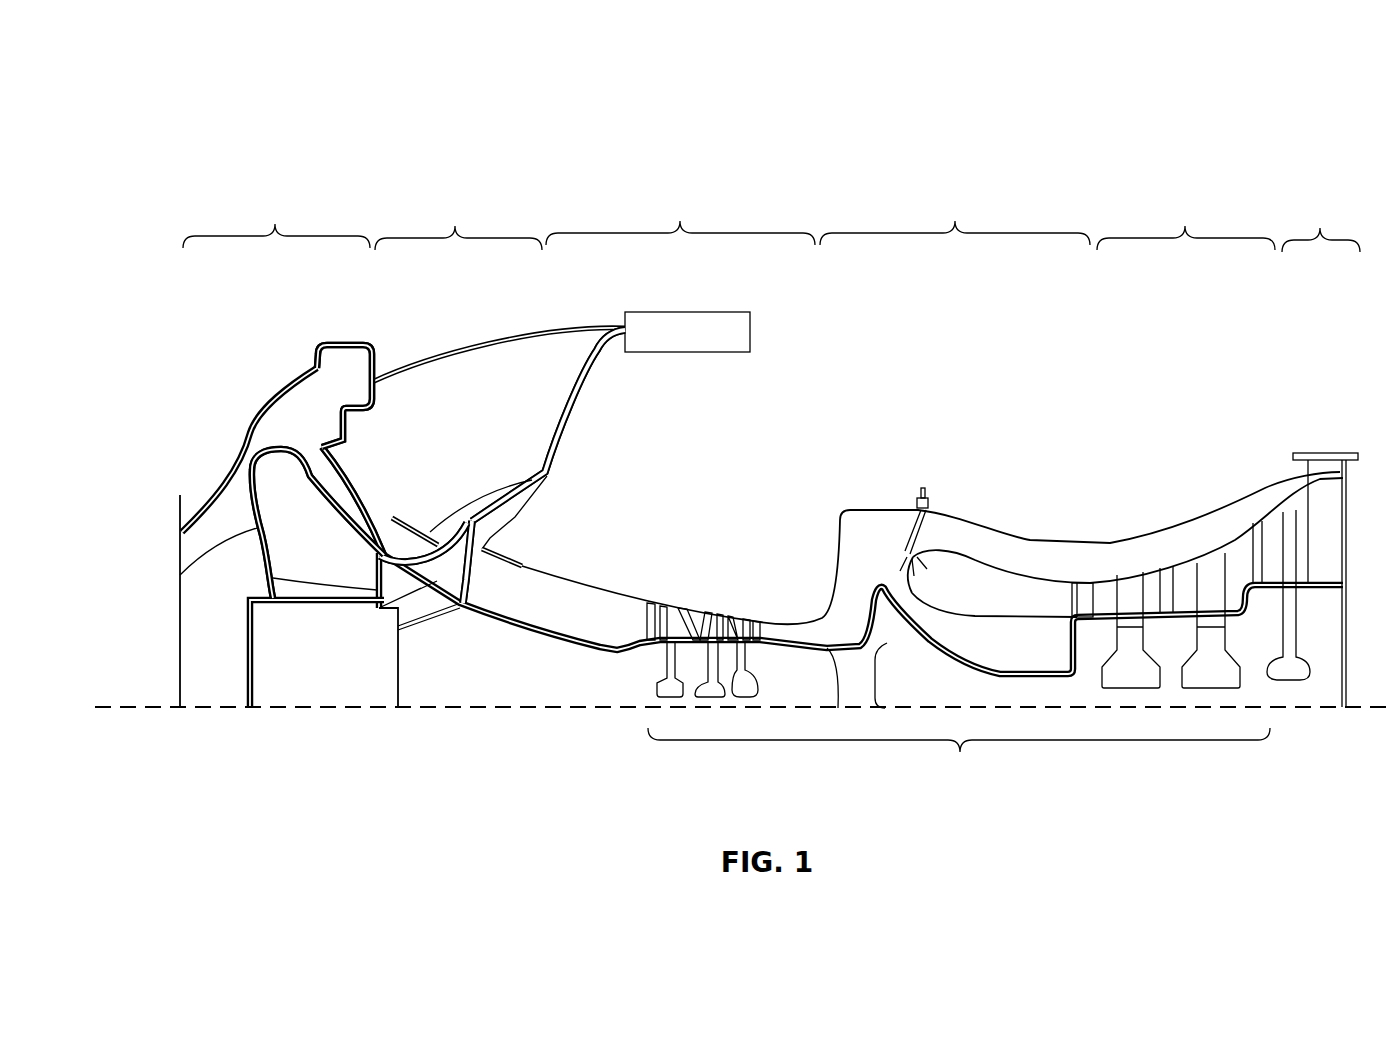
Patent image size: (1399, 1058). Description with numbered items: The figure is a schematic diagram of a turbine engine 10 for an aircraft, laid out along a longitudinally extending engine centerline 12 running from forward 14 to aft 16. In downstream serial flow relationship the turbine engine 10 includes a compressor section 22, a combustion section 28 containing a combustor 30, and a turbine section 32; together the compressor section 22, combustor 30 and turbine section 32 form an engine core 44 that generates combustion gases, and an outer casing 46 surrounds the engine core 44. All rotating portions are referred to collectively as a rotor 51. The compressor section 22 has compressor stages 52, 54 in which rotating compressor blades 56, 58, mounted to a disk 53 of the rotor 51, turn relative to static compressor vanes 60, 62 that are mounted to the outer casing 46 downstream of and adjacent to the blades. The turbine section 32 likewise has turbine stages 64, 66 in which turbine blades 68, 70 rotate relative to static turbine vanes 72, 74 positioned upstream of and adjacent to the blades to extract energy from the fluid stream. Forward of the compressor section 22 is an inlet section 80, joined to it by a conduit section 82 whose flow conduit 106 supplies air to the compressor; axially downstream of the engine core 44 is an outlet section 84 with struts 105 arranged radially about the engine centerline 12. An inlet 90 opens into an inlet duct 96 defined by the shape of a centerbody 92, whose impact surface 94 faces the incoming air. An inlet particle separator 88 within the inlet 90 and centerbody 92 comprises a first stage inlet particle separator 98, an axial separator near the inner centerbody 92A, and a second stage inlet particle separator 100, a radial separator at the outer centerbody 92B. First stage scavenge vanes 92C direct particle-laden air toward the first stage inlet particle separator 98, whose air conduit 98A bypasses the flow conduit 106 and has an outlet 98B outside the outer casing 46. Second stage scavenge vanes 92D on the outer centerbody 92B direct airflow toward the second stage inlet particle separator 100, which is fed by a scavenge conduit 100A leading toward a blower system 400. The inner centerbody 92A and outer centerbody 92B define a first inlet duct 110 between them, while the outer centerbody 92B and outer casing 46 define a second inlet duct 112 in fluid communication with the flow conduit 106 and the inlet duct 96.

The turbine engine 10 is at (126, 152).
The engine centerline 12 is at (203, 712).
The forward 14 is at (96, 707).
The aft 16 is at (1393, 707).
The compressor section 22 is at (680, 213).
The combustion section 28 is at (955, 213).
The combustor 30 is at (953, 570).
The turbine section 32 is at (1186, 223).
The engine core 44 is at (959, 759).
The outer casing 46 is at (252, 416).
The rotor 51 is at (863, 663).
The compressor stage 52 is at (657, 481).
The disk 53 is at (667, 667).
The compressor stage 54 is at (762, 503).
The compressor blade 56 is at (680, 612).
The compressor blade 58 is at (710, 614).
The static compressor vane 60 is at (648, 612).
The static compressor vane 62 is at (740, 622).
The turbine stage 64 is at (1062, 460).
The turbine stage 66 is at (1206, 425).
The turbine blade 68 is at (1135, 587).
The turbine blade 70 is at (1320, 490).
The static turbine vane 72 is at (1083, 587).
The static turbine vane 74 is at (1223, 547).
The inlet section 80 is at (276, 219).
The conduit section 82 is at (458, 223).
The outlet section 84 is at (1321, 225).
The inlet particle separator 88 is at (271, 296).
The inlet 90 is at (242, 577).
The centerbody 92 is at (266, 506).
The inner centerbody 92A is at (247, 620).
The outer centerbody 92B is at (268, 448).
The first stage scavenge vanes 92C is at (408, 627).
The second stage scavenge vanes 92D is at (279, 418).
The impact surface 94 is at (180, 577).
The inlet duct 96 is at (330, 462).
The first stage inlet particle separator 98 is at (519, 512).
The air conduit 98A is at (473, 573).
The outlet 98B is at (530, 485).
The second stage inlet particle separator 100 is at (348, 356).
The scavenge conduit 100A is at (348, 430).
The struts 105 is at (1322, 495).
The flow conduit 106 is at (421, 550).
The first inlet duct 110 is at (299, 592).
The second inlet duct 112 is at (375, 523).
The blower system 400 is at (755, 328).